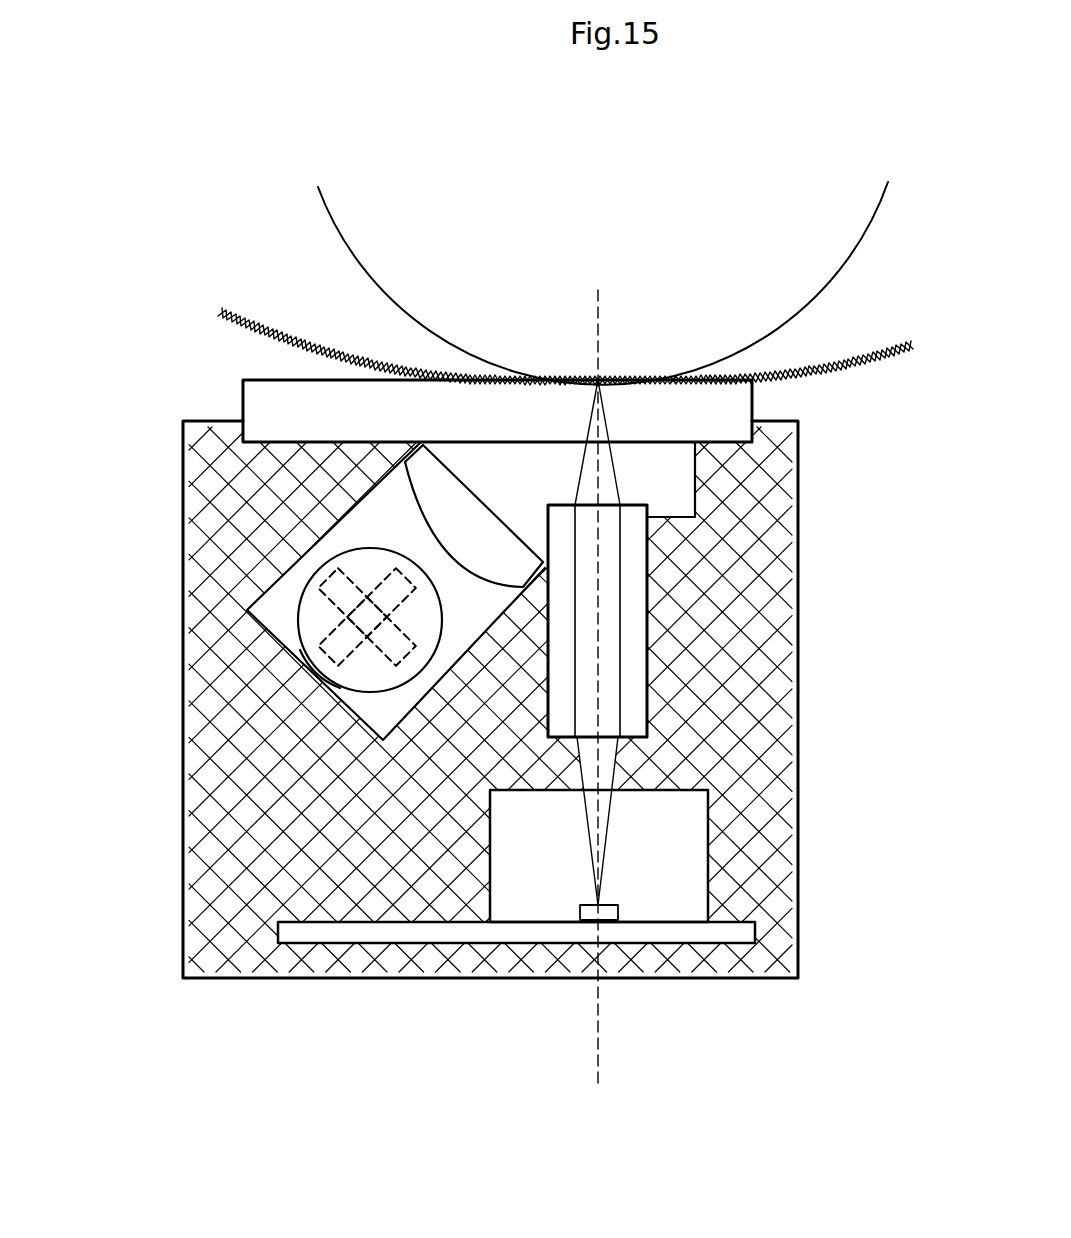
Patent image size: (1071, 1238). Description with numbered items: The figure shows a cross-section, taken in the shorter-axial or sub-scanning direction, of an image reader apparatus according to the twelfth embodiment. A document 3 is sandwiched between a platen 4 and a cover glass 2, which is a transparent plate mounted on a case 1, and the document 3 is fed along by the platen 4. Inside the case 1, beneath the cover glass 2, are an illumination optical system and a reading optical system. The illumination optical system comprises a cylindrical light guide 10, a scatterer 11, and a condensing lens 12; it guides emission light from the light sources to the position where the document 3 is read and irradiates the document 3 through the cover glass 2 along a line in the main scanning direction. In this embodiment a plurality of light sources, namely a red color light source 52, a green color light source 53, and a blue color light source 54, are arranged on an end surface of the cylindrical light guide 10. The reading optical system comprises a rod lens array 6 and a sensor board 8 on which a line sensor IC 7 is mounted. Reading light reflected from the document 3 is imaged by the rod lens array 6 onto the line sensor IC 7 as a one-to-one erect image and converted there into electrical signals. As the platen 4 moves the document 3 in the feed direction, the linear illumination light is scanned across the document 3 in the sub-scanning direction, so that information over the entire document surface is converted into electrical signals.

The case 1 is at (335, 978).
The cover glass 2 is at (277, 380).
The document 3 is at (872, 347).
The platen 4 is at (345, 240).
The rod lens array 6 is at (647, 683).
The line sensor IC 7 is at (580, 908).
The sensor board 8 is at (693, 944).
The light guide 10 is at (330, 562).
The scatterer 11 is at (330, 657).
The condensing lens 12 is at (403, 460).
The red color light source 52 is at (323, 613).
The green color light source 53 is at (300, 578).
The blue color light source 54 is at (325, 668).